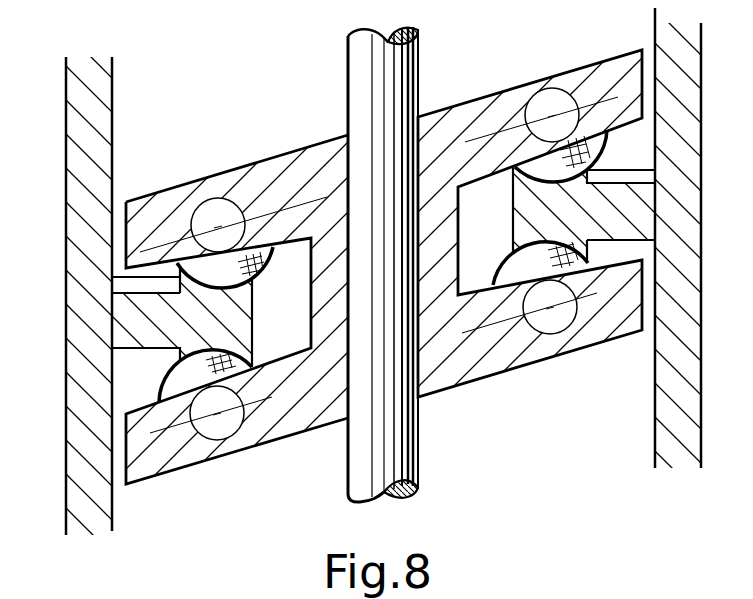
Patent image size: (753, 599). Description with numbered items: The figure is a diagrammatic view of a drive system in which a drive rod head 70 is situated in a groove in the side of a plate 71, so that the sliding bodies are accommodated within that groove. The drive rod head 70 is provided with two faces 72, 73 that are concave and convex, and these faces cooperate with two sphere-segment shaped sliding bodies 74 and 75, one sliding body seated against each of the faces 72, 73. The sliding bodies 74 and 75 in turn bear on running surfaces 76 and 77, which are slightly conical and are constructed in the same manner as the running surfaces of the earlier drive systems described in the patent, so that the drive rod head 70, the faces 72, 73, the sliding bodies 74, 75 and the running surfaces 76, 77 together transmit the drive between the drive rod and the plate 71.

The drive rod head 70 is at (203, 311).
The plate 71 is at (335, 393).
The concave and convex face 72 is at (180, 284).
The concave and convex face 73 is at (180, 352).
The sliding body 74 is at (209, 274).
The sliding body 75 is at (185, 377).
The running surface 76 is at (285, 246).
The running surface 77 is at (298, 352).